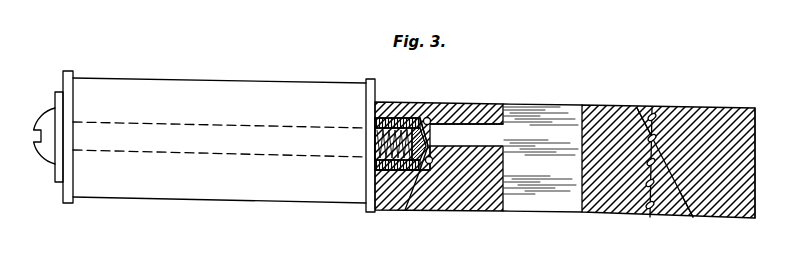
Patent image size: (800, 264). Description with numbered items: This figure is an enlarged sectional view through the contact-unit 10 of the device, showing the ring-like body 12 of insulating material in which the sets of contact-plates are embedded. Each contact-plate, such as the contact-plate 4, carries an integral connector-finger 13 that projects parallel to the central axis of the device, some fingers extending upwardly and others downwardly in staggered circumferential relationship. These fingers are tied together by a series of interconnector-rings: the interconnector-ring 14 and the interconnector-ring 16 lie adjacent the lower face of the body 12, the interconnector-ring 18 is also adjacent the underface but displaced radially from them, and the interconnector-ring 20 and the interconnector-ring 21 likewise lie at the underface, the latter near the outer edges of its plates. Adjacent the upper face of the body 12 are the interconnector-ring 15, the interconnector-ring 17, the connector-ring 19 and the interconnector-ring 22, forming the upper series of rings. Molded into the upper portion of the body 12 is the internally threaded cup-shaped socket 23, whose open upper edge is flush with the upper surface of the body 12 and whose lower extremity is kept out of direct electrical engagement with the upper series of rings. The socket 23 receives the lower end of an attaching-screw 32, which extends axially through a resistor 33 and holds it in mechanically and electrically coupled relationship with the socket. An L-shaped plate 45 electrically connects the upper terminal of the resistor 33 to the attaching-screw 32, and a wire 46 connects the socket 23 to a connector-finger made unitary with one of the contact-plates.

The contact-plate 4 is at (549, 137).
The contact-unit 10 is at (603, 103).
The ring-like body 12 is at (696, 112).
The connector-finger 13 is at (485, 104).
The interconnector-ring 14 is at (662, 213).
The interconnector-ring 15 is at (442, 165).
The interconnector-ring 16 is at (690, 215).
The interconnector-ring 17 is at (455, 124).
The interconnector-ring 18 is at (639, 110).
The connector-ring 19 is at (433, 112).
The interconnector-ring 20 is at (653, 109).
The interconnector-ring 21 is at (652, 216).
The interconnector-ring 22 is at (431, 168).
The cup-shaped socket 23 is at (413, 104).
The attaching-screw 32 is at (44, 113).
The resistor 33 is at (268, 82).
The L-shaped plate 45 is at (56, 95).
The wire 46 is at (404, 211).